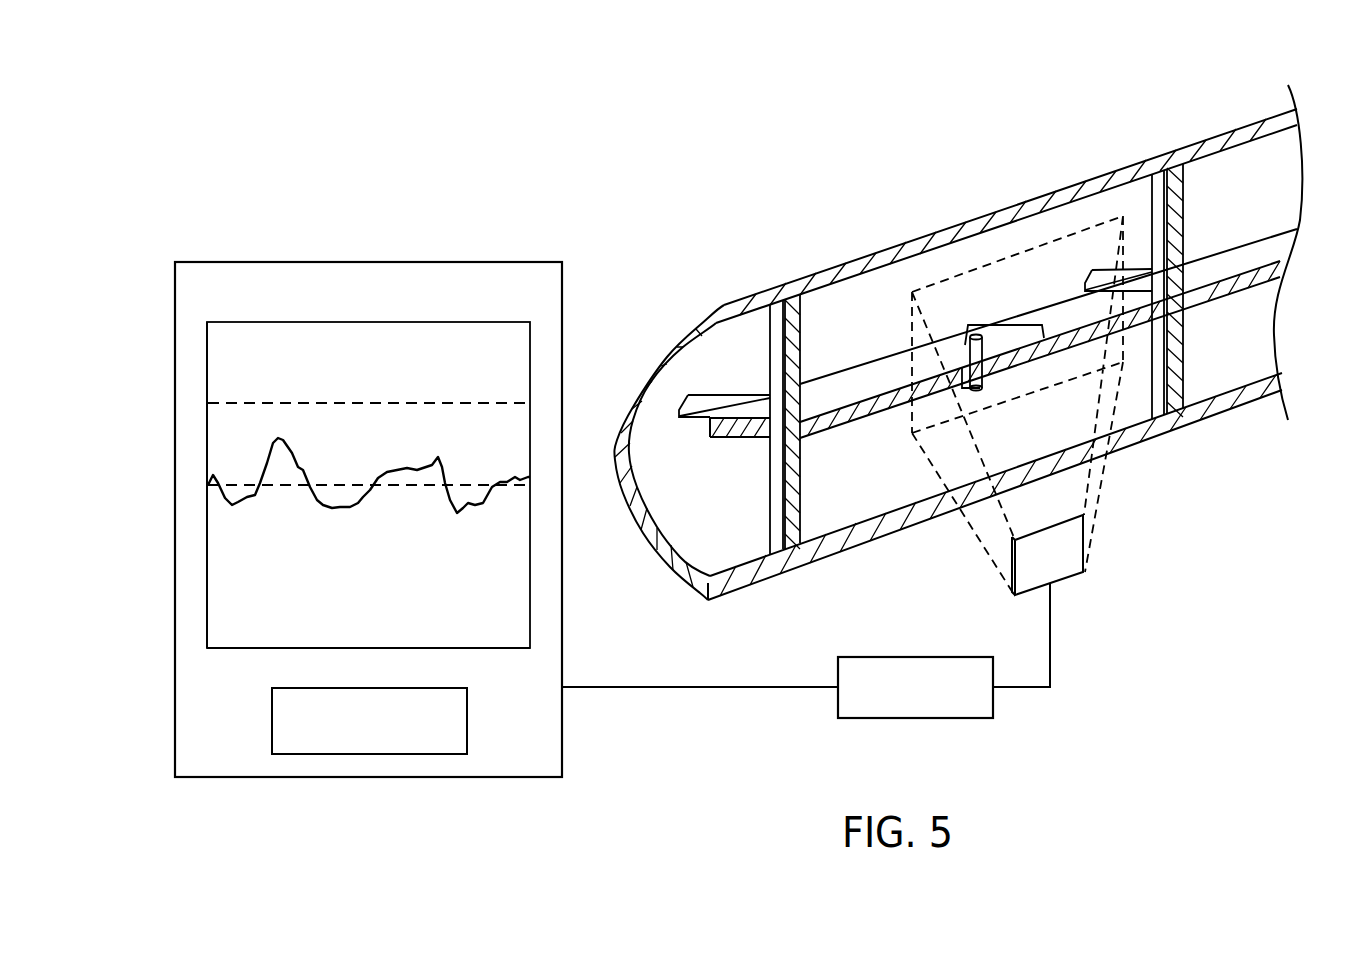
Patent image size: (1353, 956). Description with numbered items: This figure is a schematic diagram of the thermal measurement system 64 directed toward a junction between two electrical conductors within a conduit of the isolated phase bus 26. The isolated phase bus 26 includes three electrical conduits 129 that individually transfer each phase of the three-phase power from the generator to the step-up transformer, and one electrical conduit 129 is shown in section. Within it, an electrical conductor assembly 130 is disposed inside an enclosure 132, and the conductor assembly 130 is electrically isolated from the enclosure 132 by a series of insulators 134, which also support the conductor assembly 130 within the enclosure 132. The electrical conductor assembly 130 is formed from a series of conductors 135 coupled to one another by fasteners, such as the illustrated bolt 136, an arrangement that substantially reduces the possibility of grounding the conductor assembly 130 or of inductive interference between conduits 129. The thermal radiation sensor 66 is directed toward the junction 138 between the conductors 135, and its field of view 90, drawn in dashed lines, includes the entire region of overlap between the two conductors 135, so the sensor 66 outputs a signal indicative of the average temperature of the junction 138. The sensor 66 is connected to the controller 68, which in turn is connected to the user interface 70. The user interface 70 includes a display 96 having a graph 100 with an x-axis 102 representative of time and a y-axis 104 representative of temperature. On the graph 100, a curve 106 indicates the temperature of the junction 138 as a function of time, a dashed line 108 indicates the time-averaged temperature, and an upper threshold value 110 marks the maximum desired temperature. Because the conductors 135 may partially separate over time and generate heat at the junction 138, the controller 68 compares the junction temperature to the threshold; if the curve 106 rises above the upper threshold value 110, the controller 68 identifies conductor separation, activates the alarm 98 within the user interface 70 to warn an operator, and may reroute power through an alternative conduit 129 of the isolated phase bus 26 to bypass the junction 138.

The isolated phase bus 26 is at (1012, 186).
The thermal measurement system 64 is at (728, 745).
The thermal radiation sensor 66 is at (1088, 537).
The controller 68 is at (915, 657).
The user interface 70 is at (368, 262).
The field of view 90 is at (924, 452).
The display 96 is at (507, 322).
The alarm 98 is at (468, 722).
The graph 100 is at (246, 590).
The x-axis 102 is at (452, 648).
The y-axis 104 is at (210, 348).
The curve 106 is at (372, 445).
The dashed line 108 is at (520, 481).
The upper threshold value 110 is at (368, 403).
The electrical conduit 129 is at (1191, 131).
The electrical conductor assembly 130 is at (1251, 297).
The enclosure 132 is at (832, 270).
The insulators 134 is at (768, 364).
The conductors 135 is at (858, 365).
The bolt 136 is at (978, 388).
The junction 138 is at (962, 321).